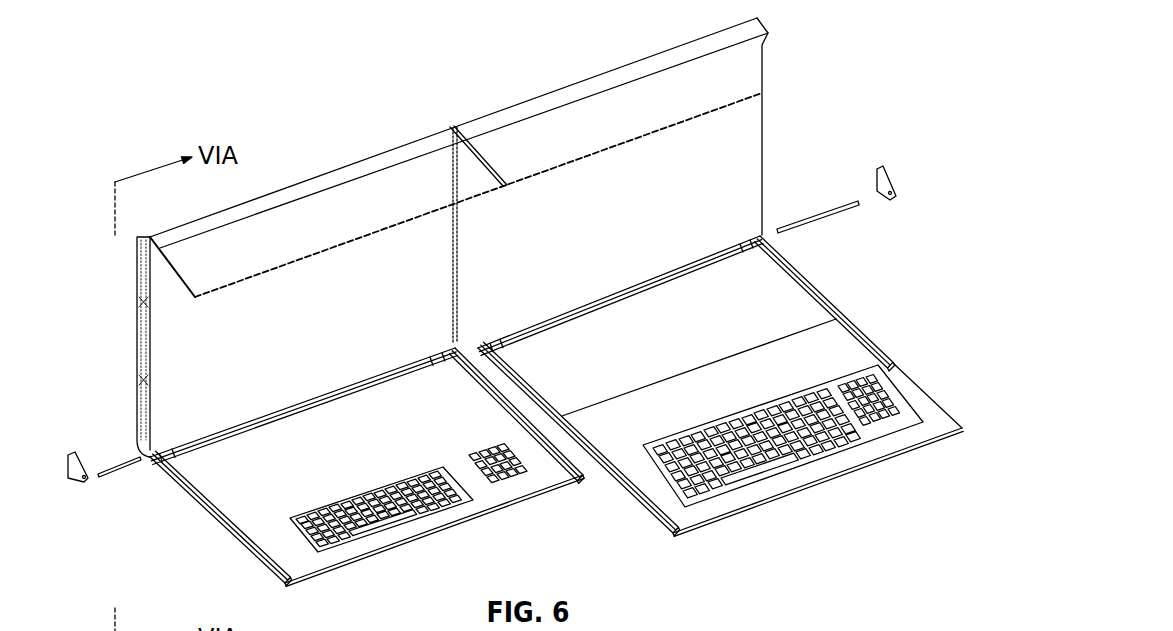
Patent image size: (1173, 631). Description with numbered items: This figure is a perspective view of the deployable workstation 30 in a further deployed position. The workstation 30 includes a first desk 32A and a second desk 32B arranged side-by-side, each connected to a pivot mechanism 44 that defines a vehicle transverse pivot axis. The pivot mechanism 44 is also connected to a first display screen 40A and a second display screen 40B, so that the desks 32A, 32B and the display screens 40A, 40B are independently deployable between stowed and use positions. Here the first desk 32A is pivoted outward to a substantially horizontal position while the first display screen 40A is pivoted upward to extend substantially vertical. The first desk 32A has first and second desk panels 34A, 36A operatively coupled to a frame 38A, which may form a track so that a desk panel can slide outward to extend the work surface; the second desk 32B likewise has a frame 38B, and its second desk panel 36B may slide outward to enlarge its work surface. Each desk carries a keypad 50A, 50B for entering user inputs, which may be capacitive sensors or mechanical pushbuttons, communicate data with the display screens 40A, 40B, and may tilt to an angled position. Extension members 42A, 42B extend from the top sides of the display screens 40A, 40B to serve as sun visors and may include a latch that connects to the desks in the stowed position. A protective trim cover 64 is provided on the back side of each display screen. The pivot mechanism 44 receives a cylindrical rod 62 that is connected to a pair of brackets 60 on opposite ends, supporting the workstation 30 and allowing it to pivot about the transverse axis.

The workstation 30 is at (890, 77).
The first desk 32A is at (868, 291).
The second desk 32B is at (139, 475).
The first desk panel 34A is at (763, 293).
The second desk panel 36A is at (842, 348).
The second desk panel 36B is at (235, 500).
The frame 38A is at (810, 277).
The frame 38B is at (230, 531).
The first display screen 40A is at (775, 155).
The second display screen 40B is at (132, 341).
The extension member 42A is at (790, 58).
The extension member 42B is at (170, 282).
The pivot mechanism 44 is at (772, 225).
The keypad 50A is at (913, 389).
The keypad 50B is at (287, 540).
The bracket 60 is at (890, 175).
The cylindrical rod 62 is at (852, 206).
The protective trim cover 64 is at (390, 157).